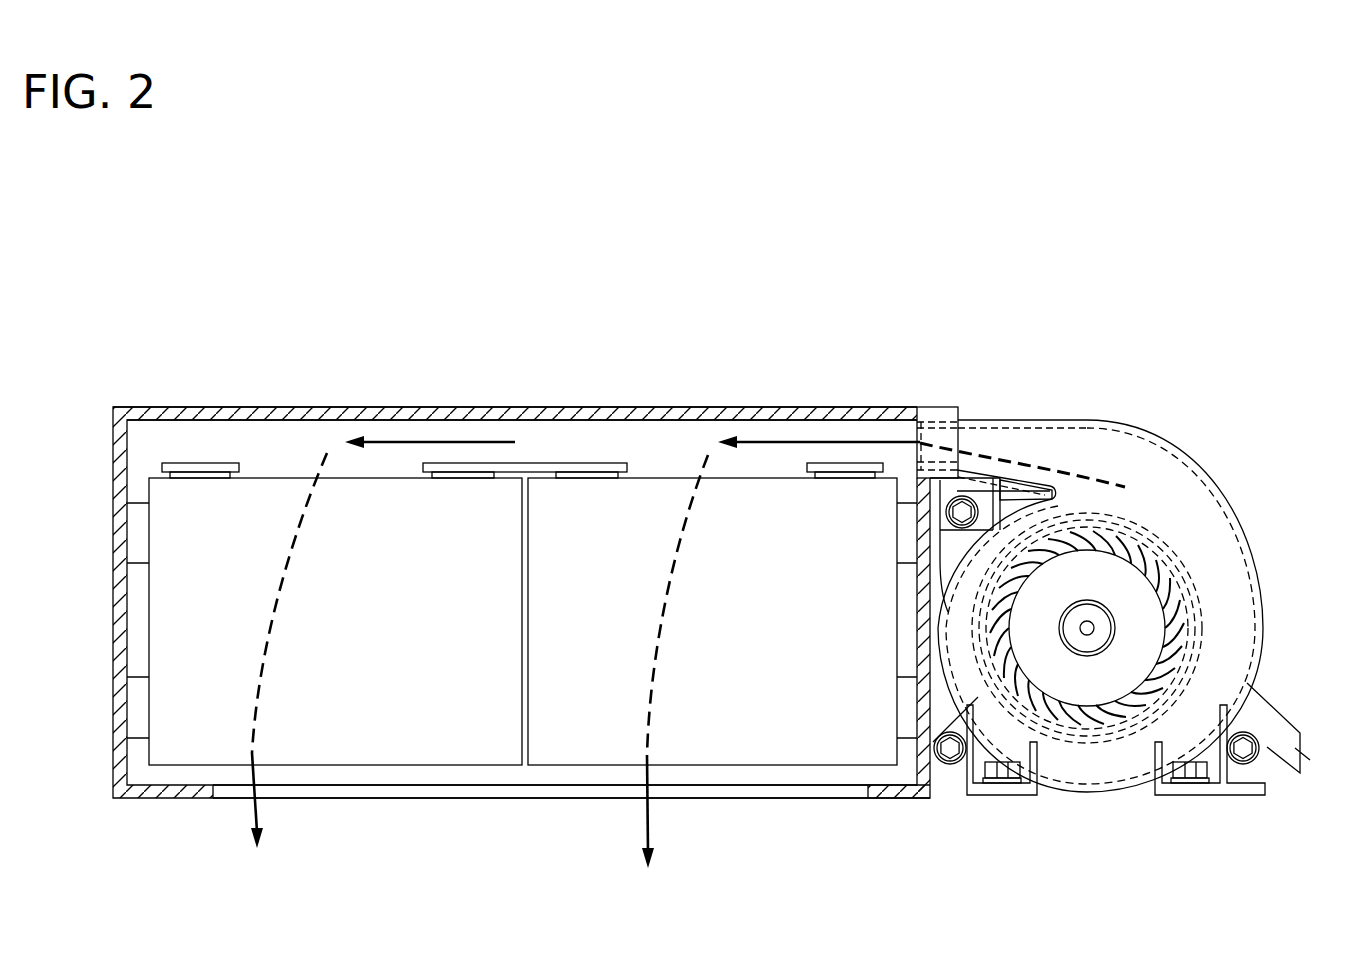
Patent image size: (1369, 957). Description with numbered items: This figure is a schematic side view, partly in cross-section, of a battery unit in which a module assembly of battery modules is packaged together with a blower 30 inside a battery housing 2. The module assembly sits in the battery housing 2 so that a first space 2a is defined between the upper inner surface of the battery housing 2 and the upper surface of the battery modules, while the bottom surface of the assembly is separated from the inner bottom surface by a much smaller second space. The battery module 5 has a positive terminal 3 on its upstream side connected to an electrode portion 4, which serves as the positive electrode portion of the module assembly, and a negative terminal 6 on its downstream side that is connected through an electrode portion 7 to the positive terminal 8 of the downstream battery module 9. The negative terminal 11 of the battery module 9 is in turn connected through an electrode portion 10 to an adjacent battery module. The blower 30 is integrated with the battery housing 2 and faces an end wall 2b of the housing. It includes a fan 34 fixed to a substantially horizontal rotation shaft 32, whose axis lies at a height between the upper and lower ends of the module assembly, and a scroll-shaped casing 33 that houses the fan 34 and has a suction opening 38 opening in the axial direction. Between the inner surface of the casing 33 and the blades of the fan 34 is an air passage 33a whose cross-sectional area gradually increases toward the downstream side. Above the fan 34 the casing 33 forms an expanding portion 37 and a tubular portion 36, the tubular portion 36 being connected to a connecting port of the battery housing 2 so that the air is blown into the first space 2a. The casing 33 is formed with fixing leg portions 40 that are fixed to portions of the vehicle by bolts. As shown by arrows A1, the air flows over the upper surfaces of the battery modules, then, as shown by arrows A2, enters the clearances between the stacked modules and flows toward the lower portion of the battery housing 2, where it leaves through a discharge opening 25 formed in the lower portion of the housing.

The battery housing 2 is at (113, 620).
The first space 2a is at (145, 457).
The end wall 2b is at (930, 780).
The positive terminal 3 is at (802, 476).
The electrode portion 4 is at (837, 463).
The battery module 5 is at (585, 752).
The negative terminal 6 is at (621, 477).
The electrode portion 7 is at (533, 463).
The positive terminal 8 is at (430, 474).
The battery module 9 is at (348, 757).
The electrode portion 10 is at (217, 463).
The negative terminal 11 is at (243, 474).
The discharge opening 25 is at (773, 790).
The blower 30 is at (1126, 610).
The rotation shaft 32 is at (1087, 628).
The casing 33 is at (1147, 606).
The air passage 33a is at (1248, 612).
The fan 34 is at (1139, 676).
The tubular portion 36 is at (1000, 420).
The expanding portion 37 is at (920, 440).
The suction opening 38 is at (1100, 712).
The fixing leg portion 40 is at (1000, 795).
The arrows A1 is at (370, 440).
The arrows A2 is at (267, 646).